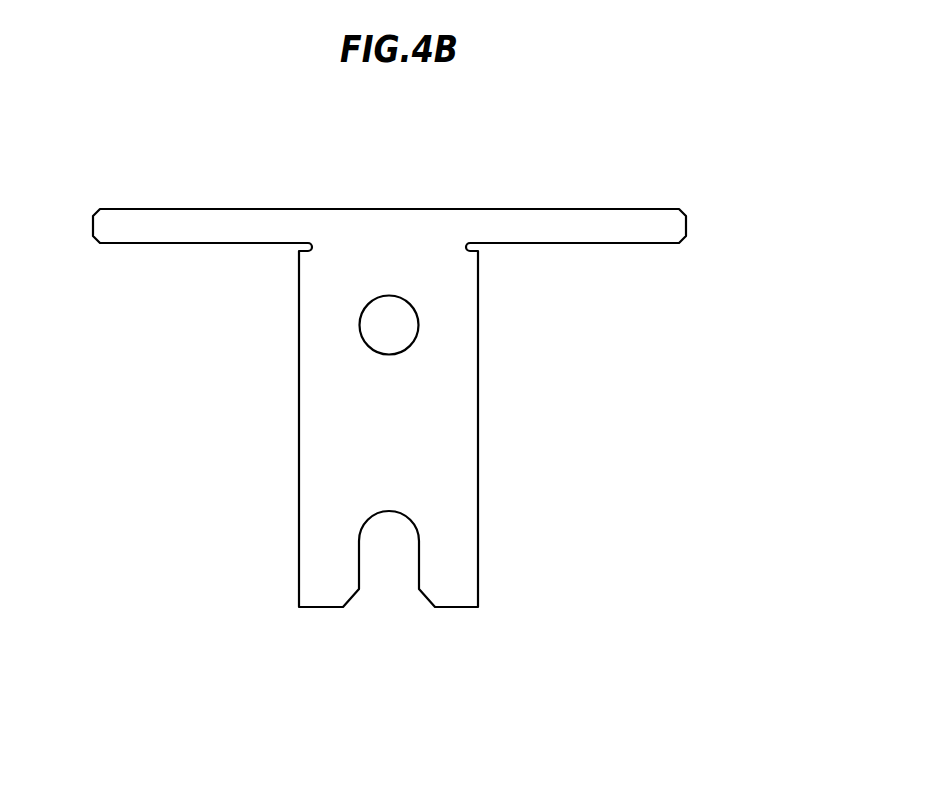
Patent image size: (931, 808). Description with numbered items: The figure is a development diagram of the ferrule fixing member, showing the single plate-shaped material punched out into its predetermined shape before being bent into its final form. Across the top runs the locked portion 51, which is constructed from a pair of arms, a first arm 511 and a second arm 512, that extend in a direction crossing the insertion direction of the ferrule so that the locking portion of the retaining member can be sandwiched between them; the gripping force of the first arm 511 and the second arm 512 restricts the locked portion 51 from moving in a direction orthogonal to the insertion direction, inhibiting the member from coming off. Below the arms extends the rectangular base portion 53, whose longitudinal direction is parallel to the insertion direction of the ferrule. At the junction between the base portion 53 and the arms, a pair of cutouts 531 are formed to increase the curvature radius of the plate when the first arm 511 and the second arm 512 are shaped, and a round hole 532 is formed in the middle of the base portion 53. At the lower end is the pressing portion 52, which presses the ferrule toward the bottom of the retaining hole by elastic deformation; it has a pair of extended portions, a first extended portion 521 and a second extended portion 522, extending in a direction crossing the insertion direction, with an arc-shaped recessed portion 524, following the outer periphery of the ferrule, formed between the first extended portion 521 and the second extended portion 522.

The locked portion 51 is at (760, 153).
The first arm 511 is at (195, 221).
The second arm 512 is at (548, 221).
The pressing portion 52 is at (298, 393).
The base portion 53 is at (480, 393).
The cutouts 531 is at (297, 251).
The round hole 532 is at (419, 328).
The recessed portion 524 is at (425, 508).
The first extended portion 521 is at (326, 595).
The second extended portion 522 is at (453, 596).